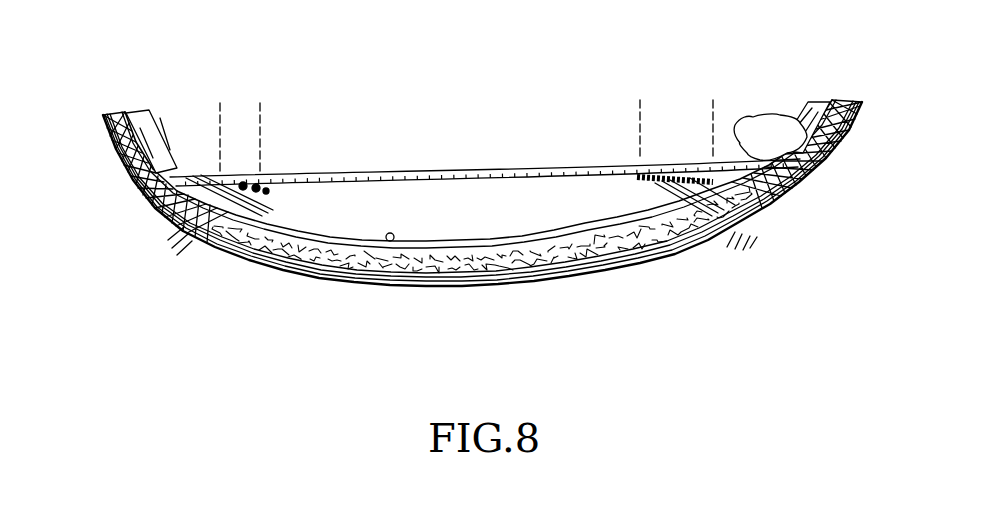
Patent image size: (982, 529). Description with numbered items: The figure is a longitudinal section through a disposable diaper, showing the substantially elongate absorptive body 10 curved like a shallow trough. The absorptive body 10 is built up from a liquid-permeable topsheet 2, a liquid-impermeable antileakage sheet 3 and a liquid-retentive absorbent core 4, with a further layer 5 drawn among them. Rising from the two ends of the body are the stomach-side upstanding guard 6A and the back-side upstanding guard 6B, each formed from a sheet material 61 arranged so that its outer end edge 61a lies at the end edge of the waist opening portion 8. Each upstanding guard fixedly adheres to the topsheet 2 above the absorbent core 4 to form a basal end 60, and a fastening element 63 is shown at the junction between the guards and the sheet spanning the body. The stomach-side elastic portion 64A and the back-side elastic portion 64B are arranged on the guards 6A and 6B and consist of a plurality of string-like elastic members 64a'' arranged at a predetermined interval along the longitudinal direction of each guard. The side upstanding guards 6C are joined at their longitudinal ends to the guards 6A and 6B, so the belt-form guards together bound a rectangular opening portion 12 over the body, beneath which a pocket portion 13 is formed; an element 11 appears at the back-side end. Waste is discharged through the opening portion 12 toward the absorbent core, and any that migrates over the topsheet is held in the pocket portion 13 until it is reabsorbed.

The topsheet 2 is at (388, 284).
The antileakage sheet 3 is at (410, 282).
The absorbent core 4 is at (441, 282).
The fourth layer 5 is at (478, 282).
The absorptive body 10 is at (506, 314).
The waist opening portion 8 is at (107, 116).
The fastening member 11 is at (763, 127).
The opening portion 12 is at (413, 190).
The pocket portion 13 is at (250, 208).
The basal end 60 is at (137, 181).
The sheet material 61 is at (135, 122).
The outer end edge 61a is at (121, 110).
The fastener 63 is at (258, 184).
The stomach-side elastic portion 64A is at (261, 100).
The back-side elastic portion 64B is at (713, 97).
The string-like elastic member 64a'' is at (446, 253).
The stomach-side upstanding guard 6A is at (232, 174).
The back-side upstanding guard 6B is at (663, 167).
The side upstanding guard 6C is at (480, 177).